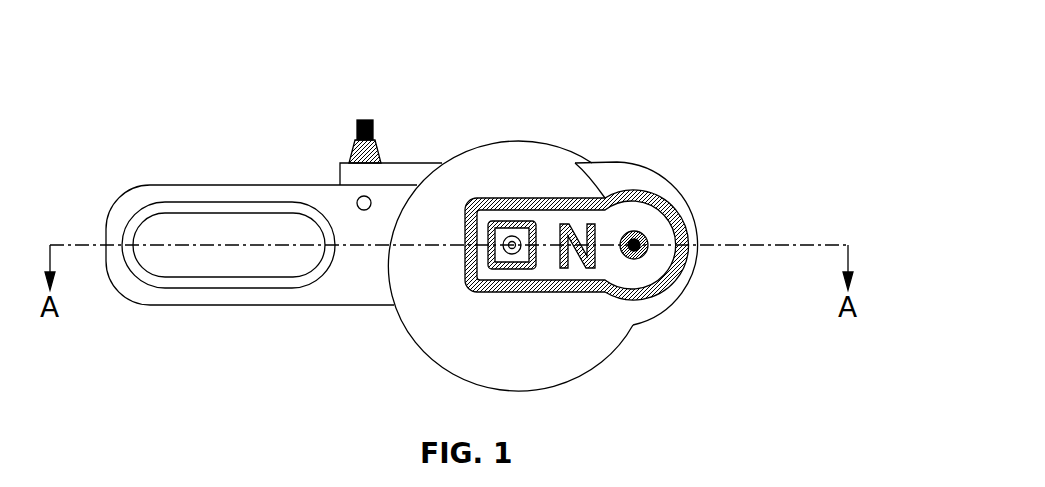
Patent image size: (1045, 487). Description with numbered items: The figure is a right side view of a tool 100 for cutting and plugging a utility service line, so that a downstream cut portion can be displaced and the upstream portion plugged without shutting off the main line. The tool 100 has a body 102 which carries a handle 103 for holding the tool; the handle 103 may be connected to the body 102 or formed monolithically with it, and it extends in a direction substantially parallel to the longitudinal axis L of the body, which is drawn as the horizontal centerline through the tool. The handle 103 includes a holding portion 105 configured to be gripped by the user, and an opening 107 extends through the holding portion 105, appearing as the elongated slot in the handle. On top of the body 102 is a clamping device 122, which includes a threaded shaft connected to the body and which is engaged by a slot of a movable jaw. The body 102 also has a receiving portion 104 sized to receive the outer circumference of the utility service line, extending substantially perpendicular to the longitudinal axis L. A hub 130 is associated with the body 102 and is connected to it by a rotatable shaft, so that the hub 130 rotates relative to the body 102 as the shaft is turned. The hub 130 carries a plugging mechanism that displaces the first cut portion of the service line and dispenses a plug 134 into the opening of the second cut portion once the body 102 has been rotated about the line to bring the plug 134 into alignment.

The tool 100 is at (189, 110).
The body 102 is at (405, 323).
The handle 103 is at (143, 308).
The receiving portion 104 is at (690, 282).
The holding portion 105 is at (240, 213).
The opening 107 is at (288, 233).
The clamping device 122 is at (378, 141).
The hub 130 is at (662, 192).
The plug 134 is at (648, 240).
The longitudinal axis L is at (193, 245).